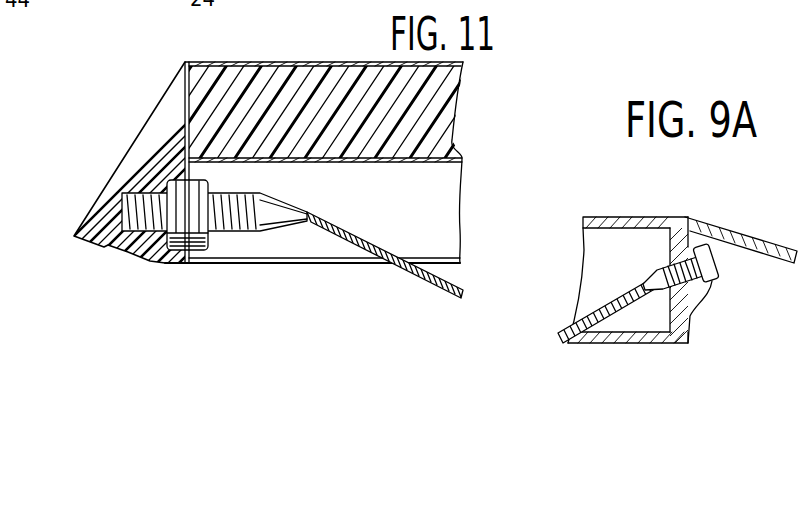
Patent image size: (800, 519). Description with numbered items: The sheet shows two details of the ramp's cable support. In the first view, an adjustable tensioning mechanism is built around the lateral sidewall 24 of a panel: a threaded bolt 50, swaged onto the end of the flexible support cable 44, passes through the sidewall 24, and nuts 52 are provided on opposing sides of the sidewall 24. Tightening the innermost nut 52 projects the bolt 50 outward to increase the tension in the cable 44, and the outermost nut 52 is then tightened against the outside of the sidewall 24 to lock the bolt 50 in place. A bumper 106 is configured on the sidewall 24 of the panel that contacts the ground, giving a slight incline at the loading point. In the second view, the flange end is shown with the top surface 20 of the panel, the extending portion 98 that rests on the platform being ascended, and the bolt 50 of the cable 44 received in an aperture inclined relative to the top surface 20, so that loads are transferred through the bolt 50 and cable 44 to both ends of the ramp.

In FIG. 11, the lateral sidewall 24 is at (183, 112).
In FIG. 11, the bumper 106 is at (125, 188).
In FIG. 11, the nut 52 is at (198, 234).
In FIG. 11, the threaded bolt 50 is at (252, 233).
In FIG. 9A, the threaded bolt 50 is at (707, 300).
In FIG. 11, the flexible support cable 44 is at (395, 267).
In FIG. 9A, the flexible support cable 44 is at (622, 300).
In FIG. 9A, the top surface 20 is at (633, 217).
In FIG. 9A, the extending portion 98 is at (757, 237).